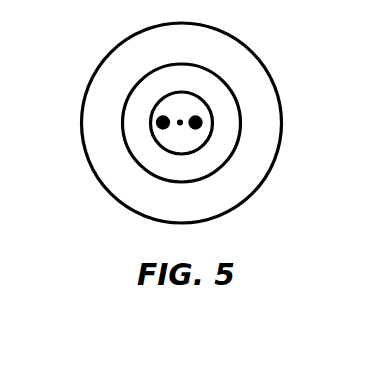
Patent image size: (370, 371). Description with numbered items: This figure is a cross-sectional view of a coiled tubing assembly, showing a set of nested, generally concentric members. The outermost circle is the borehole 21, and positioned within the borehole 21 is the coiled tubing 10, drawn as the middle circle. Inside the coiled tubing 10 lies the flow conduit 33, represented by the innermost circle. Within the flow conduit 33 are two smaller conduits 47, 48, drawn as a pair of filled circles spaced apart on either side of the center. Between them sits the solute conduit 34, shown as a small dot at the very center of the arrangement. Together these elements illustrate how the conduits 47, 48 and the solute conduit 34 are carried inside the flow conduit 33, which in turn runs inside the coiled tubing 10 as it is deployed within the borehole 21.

The borehole 21 is at (251, 38).
The coiled tubing 10 is at (238, 146).
The flow conduit 33 is at (195, 152).
The conduit 48 is at (156, 122).
The conduit 47 is at (203, 121).
The solute conduit 34 is at (177, 119).